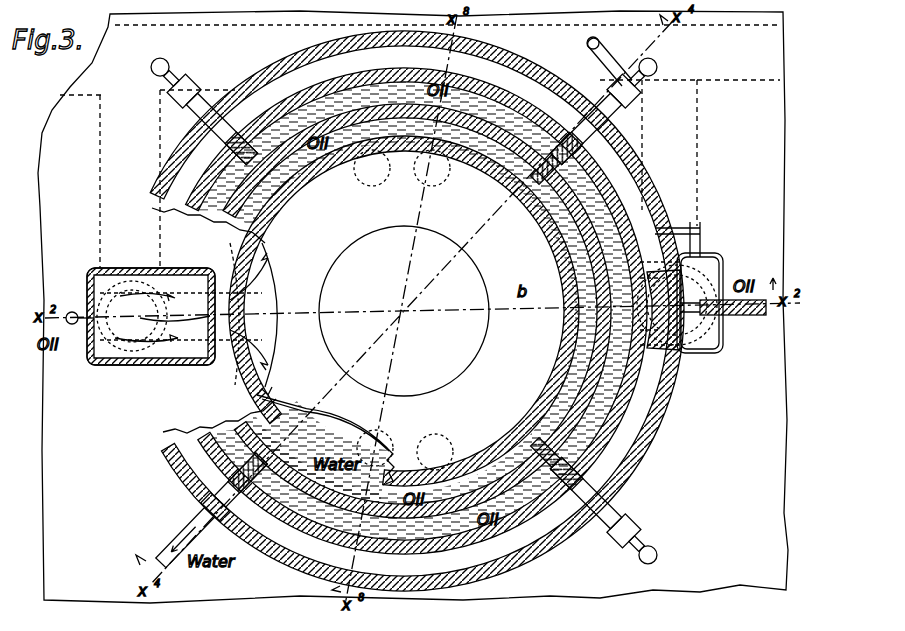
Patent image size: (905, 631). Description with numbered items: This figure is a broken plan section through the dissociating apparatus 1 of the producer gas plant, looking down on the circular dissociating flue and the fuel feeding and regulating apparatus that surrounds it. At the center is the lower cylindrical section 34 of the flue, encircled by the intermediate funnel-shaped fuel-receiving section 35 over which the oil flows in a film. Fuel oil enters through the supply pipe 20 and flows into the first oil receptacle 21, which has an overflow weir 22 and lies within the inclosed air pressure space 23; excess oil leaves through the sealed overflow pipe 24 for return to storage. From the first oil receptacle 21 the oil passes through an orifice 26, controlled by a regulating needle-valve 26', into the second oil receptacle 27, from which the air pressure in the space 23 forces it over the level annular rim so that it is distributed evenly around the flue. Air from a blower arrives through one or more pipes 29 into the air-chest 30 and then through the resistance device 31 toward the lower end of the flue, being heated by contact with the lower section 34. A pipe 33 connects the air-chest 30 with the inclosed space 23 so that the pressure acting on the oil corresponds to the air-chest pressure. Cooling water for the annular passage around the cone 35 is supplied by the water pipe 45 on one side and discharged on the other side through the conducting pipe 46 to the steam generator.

The dissociating apparatus 1 is at (712, 147).
The supply pipe 20 is at (743, 312).
The first oil receptacle 21 is at (220, 192).
The overflow weir 22 is at (266, 125).
The inclosed air pressure space 23 is at (237, 112).
The sealed overflow pipe 24 is at (72, 312).
The orifice 26 is at (403, 310).
The regulating needle-valve 26' is at (577, 310).
The second oil receptacle 27 is at (345, 200).
The pipes 29 is at (740, 263).
The air-chest 30 is at (188, 315).
The resistance device 31 is at (408, 185).
The pipe 33 is at (697, 241).
The lower cylindrical section 34 is at (450, 378).
The intermediate funnel-shaped fuel-receiving section 35 is at (404, 311).
The water pipe 45 is at (177, 538).
The conducting pipe 46 is at (598, 72).